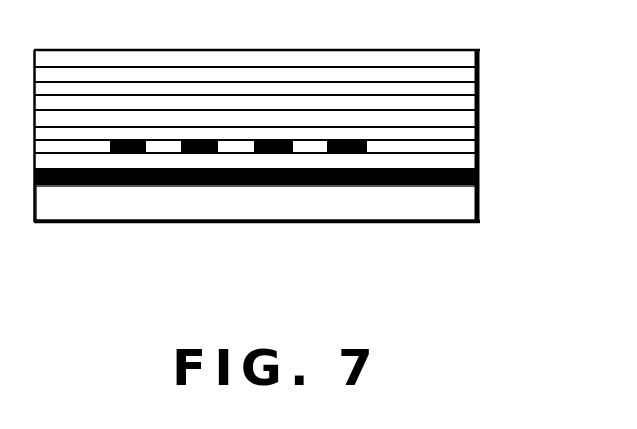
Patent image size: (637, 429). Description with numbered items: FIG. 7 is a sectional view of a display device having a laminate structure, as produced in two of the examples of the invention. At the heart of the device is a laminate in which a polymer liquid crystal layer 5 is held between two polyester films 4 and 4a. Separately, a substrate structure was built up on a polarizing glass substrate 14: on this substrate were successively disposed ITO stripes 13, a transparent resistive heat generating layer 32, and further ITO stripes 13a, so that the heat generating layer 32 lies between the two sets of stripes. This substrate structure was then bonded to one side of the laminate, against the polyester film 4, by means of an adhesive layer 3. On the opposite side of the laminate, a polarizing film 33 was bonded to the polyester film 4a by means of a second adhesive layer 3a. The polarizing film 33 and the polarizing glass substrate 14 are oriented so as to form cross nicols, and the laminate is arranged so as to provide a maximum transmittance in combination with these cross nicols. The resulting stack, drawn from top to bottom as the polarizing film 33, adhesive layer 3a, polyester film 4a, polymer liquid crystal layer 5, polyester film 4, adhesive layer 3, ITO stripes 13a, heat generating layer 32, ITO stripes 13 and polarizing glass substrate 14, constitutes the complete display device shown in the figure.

The polarizing film 33 is at (479, 52).
The adhesive layer 3a is at (479, 77).
The polyester film 4a is at (479, 89).
The polymer liquid crystal layer 5 is at (479, 106).
The polyester film 4 is at (479, 122).
The adhesive layer 3 is at (479, 138).
The ITO stripes 13a is at (350, 155).
The transparent resistive heat generating layer 32 is at (479, 163).
The ITO stripes 13 is at (479, 188).
The polarizing glass substrate 14 is at (426, 208).